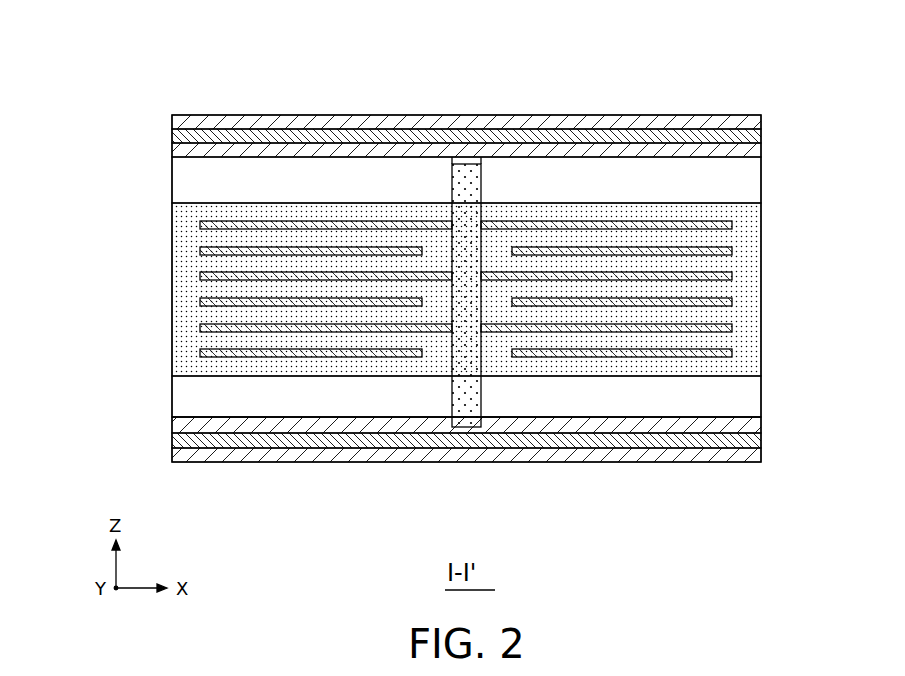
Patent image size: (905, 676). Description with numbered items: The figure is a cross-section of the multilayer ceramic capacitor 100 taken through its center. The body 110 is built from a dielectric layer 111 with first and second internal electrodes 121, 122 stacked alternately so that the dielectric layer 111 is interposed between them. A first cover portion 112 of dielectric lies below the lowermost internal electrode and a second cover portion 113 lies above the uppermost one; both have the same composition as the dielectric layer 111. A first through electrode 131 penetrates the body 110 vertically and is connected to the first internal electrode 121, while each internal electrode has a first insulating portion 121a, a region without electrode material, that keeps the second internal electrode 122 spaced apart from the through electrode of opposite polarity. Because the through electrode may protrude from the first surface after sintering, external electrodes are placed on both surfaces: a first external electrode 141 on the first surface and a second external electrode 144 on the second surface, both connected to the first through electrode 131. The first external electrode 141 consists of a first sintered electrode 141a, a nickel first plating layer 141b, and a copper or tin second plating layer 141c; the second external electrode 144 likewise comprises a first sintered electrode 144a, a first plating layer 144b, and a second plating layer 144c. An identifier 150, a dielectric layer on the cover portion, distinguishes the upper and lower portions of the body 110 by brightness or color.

The multilayer ceramic capacitor 100 is at (312, 38).
The body 110 is at (503, 330).
The dielectric layer 111 is at (740, 320).
The first cover portion 112 is at (757, 392).
The second cover portion 113 is at (757, 178).
The first internal electrode 121 is at (277, 367).
The first insulating portion 121a is at (437, 352).
The second internal electrode 122 is at (740, 355).
The first through electrode 131 is at (468, 170).
The first external electrode 141 is at (399, 444).
The first sintered electrode 141a is at (172, 428).
The first plating layer 141b is at (172, 440).
The second plating layer 141c is at (172, 460).
The second external electrode 144 is at (398, 133).
The first sintered electrode 144a is at (172, 150).
The first plating layer 144b is at (172, 137).
The second plating layer 144c is at (172, 121).
The identifier 150 is at (292, 418).